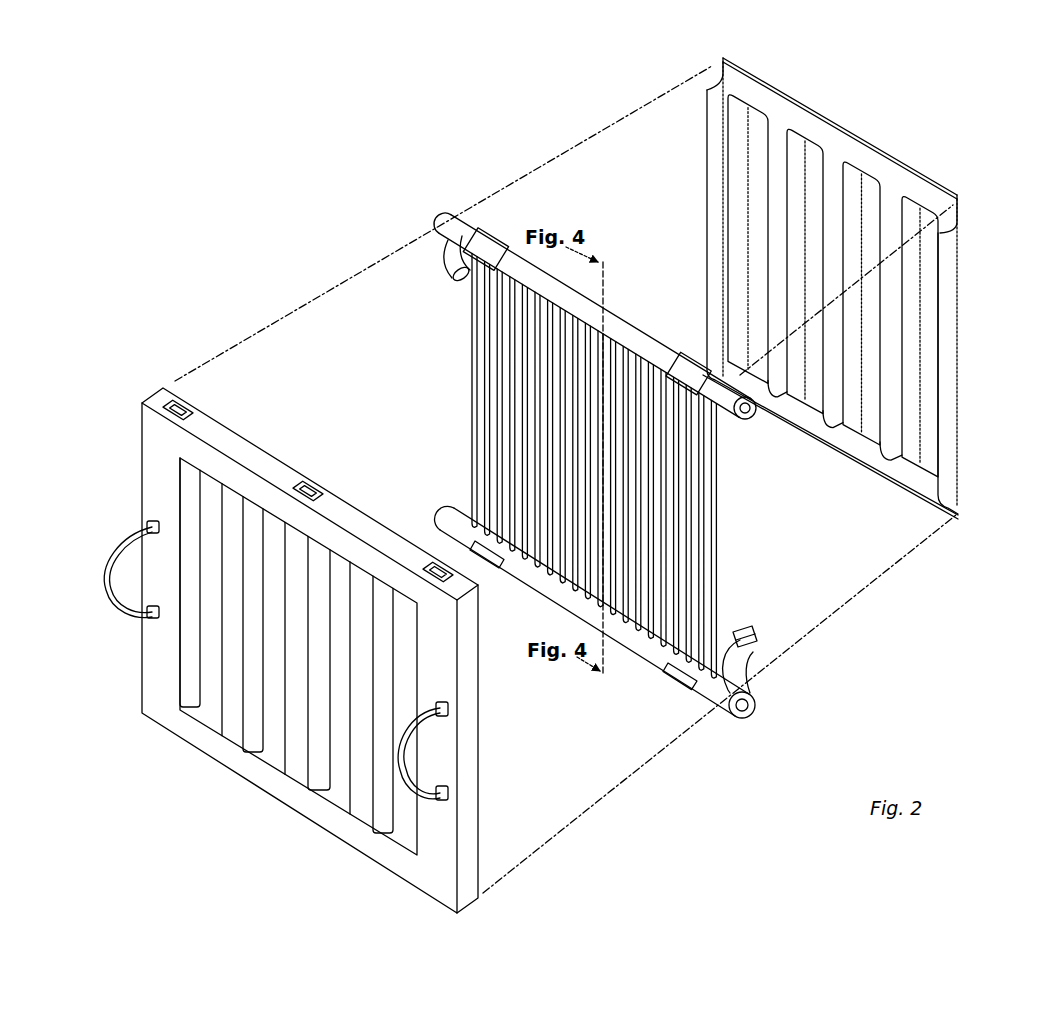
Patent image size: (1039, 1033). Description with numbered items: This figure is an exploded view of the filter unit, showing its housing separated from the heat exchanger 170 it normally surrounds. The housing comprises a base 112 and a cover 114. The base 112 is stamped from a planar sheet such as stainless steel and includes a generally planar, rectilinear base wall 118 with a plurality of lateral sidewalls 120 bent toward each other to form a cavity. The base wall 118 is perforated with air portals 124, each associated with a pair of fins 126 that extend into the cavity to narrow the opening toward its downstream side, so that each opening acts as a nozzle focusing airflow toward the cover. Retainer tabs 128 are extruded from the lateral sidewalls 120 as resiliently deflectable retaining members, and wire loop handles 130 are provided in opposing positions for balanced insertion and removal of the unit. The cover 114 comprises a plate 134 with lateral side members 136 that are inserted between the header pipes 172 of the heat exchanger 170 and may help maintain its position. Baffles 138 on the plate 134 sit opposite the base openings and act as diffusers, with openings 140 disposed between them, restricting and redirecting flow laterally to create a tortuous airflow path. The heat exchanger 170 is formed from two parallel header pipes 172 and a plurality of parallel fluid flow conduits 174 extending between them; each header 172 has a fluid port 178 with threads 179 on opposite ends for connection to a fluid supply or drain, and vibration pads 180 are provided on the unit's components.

The base 112 is at (118, 462).
The cover 114 is at (916, 103).
The base wall 118 is at (418, 868).
The lateral sidewalls 120 is at (480, 745).
The air portals 124 is at (208, 714).
The fins 126 is at (186, 690).
The retainer tabs 128 is at (188, 402).
The handle 130 is at (110, 583).
The plate 134 is at (785, 100).
The lateral side members 136 is at (708, 163).
The baffles 138 is at (734, 100).
The opening 140 is at (778, 368).
The heat exchanger 170 is at (425, 190).
The header pipes 172 is at (621, 330).
The fluid flow conduits 174 is at (477, 430).
The fluid port 178 is at (455, 272).
The threads 179 is at (754, 634).
The vibration pads 180 is at (488, 225).